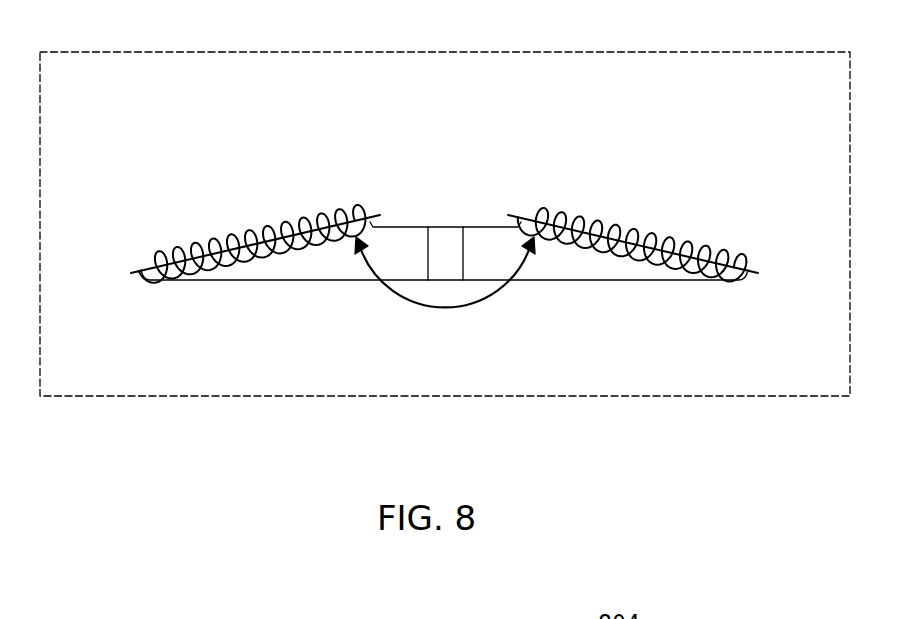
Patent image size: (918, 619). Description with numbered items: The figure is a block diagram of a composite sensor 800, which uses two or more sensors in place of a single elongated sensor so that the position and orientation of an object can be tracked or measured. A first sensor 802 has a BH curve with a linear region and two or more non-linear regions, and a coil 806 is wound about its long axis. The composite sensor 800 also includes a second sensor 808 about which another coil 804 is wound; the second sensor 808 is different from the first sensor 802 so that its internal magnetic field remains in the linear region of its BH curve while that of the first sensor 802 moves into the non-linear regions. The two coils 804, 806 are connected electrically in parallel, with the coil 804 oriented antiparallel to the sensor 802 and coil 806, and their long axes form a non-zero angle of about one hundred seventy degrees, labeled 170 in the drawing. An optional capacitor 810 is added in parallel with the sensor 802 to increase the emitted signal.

The composite sensor 800 is at (152, 52).
The first sensor 802 is at (137, 268).
The coil 804 is at (757, 257).
The coil 806 is at (230, 236).
The second sensor 808 is at (752, 275).
The capacitor 810 is at (442, 247).
The angle between spring arms 170 is at (443, 310).